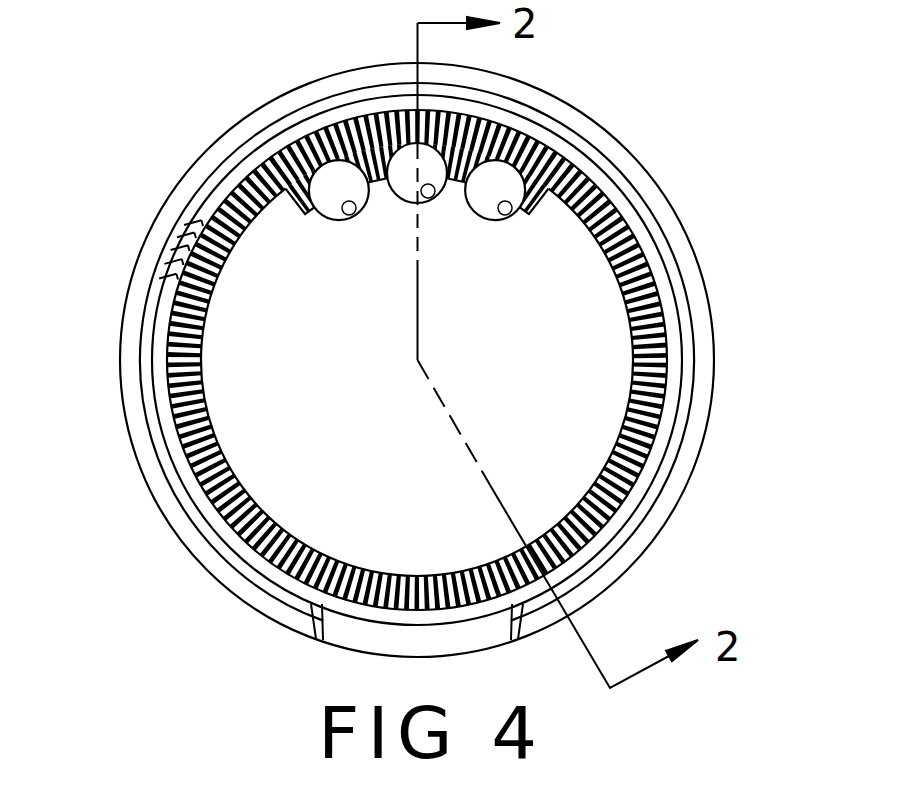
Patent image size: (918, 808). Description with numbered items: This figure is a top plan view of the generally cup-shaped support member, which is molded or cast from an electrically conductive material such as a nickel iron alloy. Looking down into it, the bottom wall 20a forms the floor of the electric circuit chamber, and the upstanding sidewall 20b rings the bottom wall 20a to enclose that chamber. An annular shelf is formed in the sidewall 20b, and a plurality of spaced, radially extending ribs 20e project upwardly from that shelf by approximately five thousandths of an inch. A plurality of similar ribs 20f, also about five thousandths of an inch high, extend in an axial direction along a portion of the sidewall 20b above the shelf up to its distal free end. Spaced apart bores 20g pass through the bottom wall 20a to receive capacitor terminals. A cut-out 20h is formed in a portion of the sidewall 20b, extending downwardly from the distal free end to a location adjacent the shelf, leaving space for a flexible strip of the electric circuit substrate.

The bottom wall 20a is at (325, 378).
The upstanding sidewall 20b is at (650, 181).
The radially extending ribs 20e is at (634, 487).
The axial ribs 20f is at (165, 280).
The bores 20g is at (340, 217).
The cut-out 20h is at (375, 643).